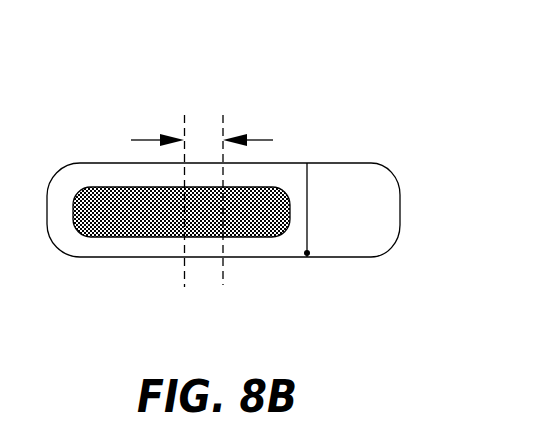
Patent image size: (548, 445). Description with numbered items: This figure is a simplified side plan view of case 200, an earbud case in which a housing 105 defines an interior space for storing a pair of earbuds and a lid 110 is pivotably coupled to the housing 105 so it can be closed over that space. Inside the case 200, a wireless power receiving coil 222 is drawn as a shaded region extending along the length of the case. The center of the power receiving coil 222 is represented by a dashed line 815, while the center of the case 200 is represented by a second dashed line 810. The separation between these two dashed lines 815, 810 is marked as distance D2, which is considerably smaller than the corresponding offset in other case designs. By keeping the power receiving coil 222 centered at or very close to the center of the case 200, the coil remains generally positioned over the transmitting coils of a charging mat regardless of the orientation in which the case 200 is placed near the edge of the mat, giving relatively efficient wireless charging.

The case 200 is at (140, 53).
The lid 110 is at (384, 170).
The housing 105 is at (277, 162).
The power receiving coil 222 is at (100, 190).
The dashed line 815 is at (185, 122).
The dashed line 810 is at (223, 280).
The distance D2 is at (208, 133).